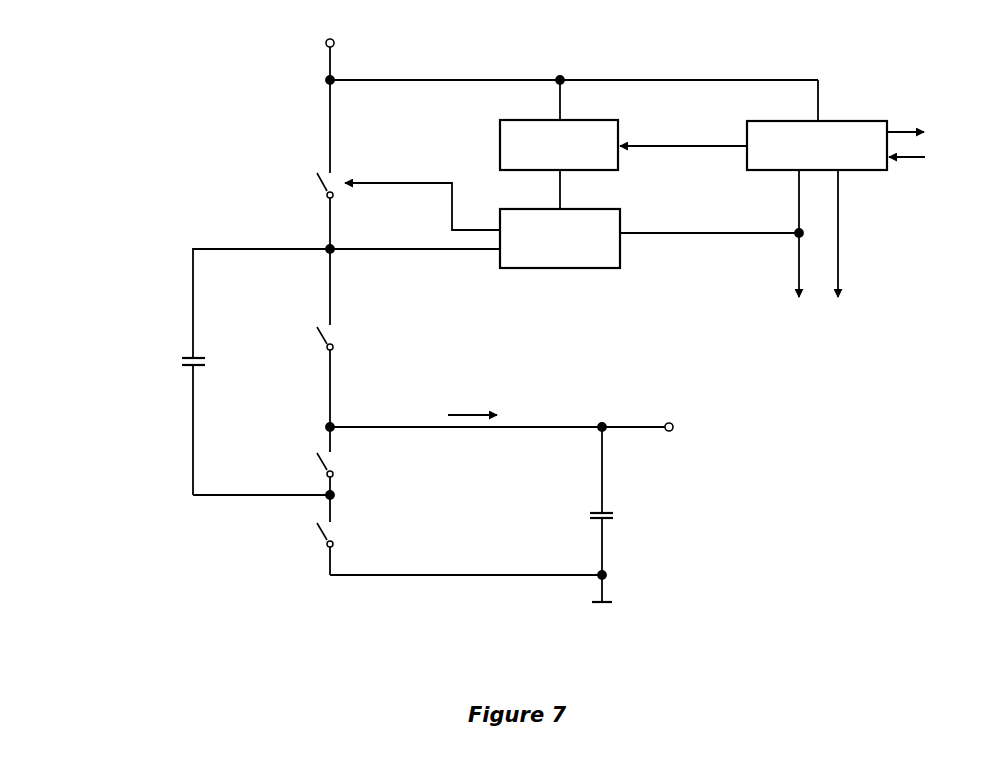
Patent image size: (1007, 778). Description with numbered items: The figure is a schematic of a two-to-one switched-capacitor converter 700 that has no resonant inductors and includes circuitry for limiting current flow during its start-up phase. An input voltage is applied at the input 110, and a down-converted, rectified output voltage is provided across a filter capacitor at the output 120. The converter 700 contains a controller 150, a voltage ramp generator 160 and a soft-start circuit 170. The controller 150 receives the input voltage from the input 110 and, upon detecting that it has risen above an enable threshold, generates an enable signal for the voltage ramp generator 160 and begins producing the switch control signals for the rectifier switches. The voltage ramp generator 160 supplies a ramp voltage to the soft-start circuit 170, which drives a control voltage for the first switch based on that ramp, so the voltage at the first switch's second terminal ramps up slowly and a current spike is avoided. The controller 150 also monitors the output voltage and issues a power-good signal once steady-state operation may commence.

The switched-capacitor converter 700 is at (62, 60).
The input 110 is at (311, 58).
The output 120 is at (667, 416).
The controller 150 is at (817, 135).
The voltage ramp generator 160 is at (559, 136).
The soft-start circuit 170 is at (560, 228).